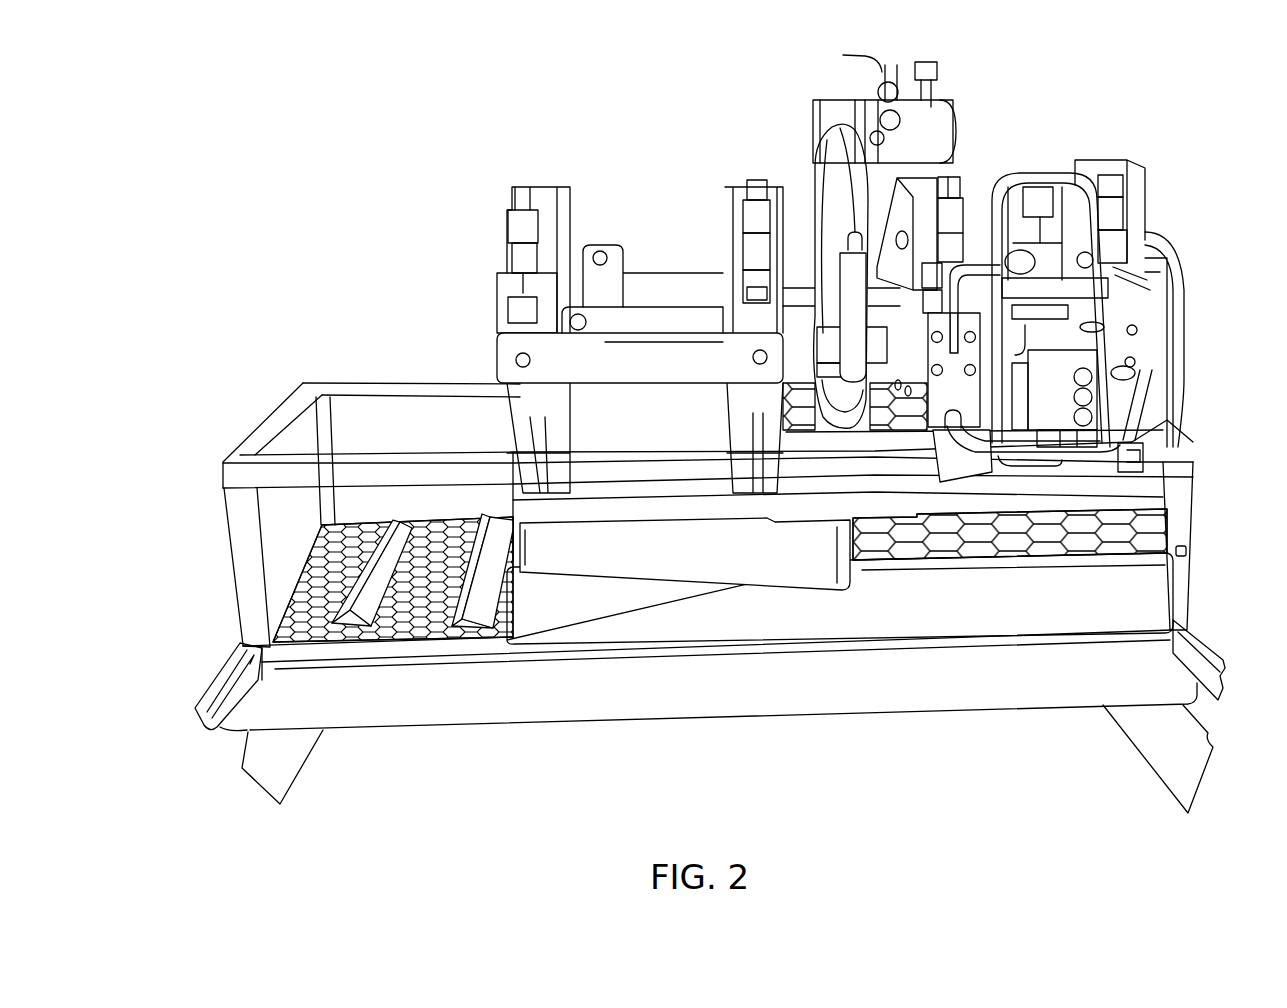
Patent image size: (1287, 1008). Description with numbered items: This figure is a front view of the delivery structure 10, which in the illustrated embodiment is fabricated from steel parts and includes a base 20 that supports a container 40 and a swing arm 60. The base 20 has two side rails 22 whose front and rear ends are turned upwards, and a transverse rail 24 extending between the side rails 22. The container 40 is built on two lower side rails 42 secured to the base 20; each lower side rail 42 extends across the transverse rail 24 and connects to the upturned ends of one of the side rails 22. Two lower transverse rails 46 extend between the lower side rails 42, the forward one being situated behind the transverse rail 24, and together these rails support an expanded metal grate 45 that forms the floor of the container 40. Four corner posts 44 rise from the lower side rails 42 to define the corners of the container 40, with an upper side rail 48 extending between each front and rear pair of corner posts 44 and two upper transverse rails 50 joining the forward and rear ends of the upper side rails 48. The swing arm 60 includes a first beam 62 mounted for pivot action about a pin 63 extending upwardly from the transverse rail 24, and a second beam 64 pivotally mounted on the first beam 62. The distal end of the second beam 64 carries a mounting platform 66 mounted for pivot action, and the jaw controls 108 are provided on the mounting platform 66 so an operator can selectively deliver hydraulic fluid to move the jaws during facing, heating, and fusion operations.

The delivery structure 10 is at (226, 206).
The base 20 is at (345, 746).
The side rails 22 is at (300, 782).
The transverse rail 24 is at (503, 732).
The container 40 is at (213, 549).
The lower side rails 42 is at (222, 690).
The corner posts 44 is at (322, 432).
The expanded metal grate 45 is at (395, 583).
The lower transverse rails 46 is at (313, 643).
The upper side rails 48 is at (278, 418).
The upper transverse rails 50 is at (403, 383).
The swing arm 60 is at (643, 622).
The first beam 62 is at (942, 635).
The pin 63 is at (1168, 548).
The second beam 64 is at (729, 582).
The mounting platform 66 is at (888, 522).
The jaw controls 108 is at (1103, 350).